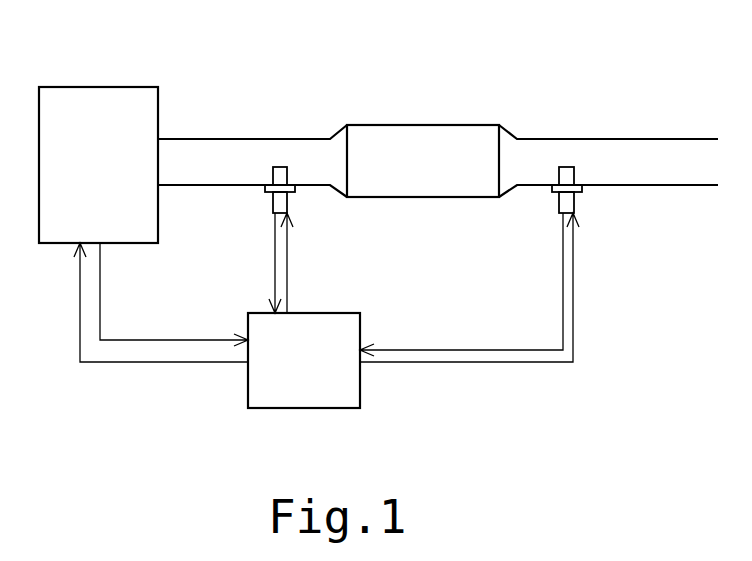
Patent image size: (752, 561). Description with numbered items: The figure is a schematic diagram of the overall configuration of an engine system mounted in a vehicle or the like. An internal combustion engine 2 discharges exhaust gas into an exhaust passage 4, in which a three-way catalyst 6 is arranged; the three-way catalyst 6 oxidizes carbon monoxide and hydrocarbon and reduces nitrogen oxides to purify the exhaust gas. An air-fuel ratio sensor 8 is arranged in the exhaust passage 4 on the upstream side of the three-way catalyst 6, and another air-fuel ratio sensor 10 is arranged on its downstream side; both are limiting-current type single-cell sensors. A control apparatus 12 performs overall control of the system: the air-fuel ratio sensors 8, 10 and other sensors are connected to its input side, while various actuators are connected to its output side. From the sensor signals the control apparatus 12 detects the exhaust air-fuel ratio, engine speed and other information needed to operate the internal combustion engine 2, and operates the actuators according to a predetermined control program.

The internal combustion engine 2 is at (90, 116).
The exhaust passage 4 is at (245, 150).
The three-way catalyst 6 is at (423, 140).
The air-fuel ratio sensor 8 is at (293, 188).
The air-fuel ratio sensor 10 is at (583, 188).
The control apparatus 12 is at (303, 402).